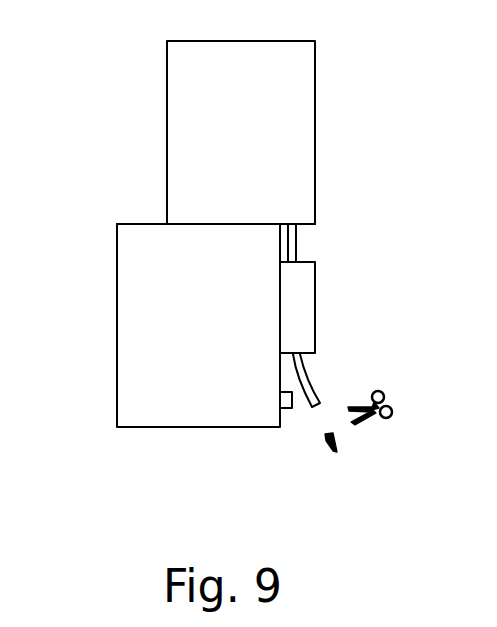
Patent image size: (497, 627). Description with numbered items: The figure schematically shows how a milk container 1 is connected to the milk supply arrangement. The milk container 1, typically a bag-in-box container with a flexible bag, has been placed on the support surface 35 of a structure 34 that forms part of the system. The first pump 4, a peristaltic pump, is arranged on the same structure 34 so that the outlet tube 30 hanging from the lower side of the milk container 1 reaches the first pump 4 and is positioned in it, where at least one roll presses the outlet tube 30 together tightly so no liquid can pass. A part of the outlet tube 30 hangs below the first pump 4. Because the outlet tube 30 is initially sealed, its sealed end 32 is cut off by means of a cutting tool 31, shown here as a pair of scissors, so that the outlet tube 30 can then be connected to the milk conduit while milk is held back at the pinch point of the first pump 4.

The milk container 1 is at (316, 96).
The first pump 4 is at (316, 294).
The outlet tube 30 is at (317, 385).
The cutting tool 31 is at (388, 402).
The sealed end 32 is at (325, 445).
The structure 34 is at (117, 327).
The support surface 35 is at (140, 224).